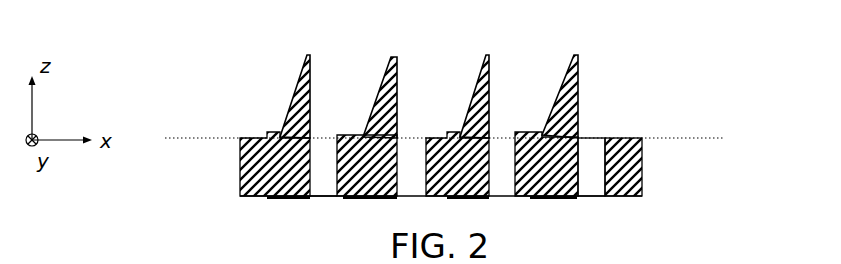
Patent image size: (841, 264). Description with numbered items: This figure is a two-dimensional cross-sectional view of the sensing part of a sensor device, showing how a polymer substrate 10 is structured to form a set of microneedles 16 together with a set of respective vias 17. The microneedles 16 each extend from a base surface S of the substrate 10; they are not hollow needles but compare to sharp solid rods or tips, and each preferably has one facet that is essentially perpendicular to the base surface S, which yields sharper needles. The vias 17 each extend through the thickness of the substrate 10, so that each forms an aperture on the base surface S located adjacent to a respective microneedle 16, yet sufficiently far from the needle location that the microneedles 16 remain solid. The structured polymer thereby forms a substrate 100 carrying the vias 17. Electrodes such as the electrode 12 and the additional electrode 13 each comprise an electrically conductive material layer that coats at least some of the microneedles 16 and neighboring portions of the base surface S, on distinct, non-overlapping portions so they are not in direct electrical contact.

The polymer substrate 10 is at (198, 174).
The electrode 12 is at (289, 106).
The additional electrode 13 is at (466, 117).
The microneedle 16 is at (386, 72).
The via 17 is at (324, 190).
The substrate 100 is at (630, 138).
The base surface S is at (713, 137).